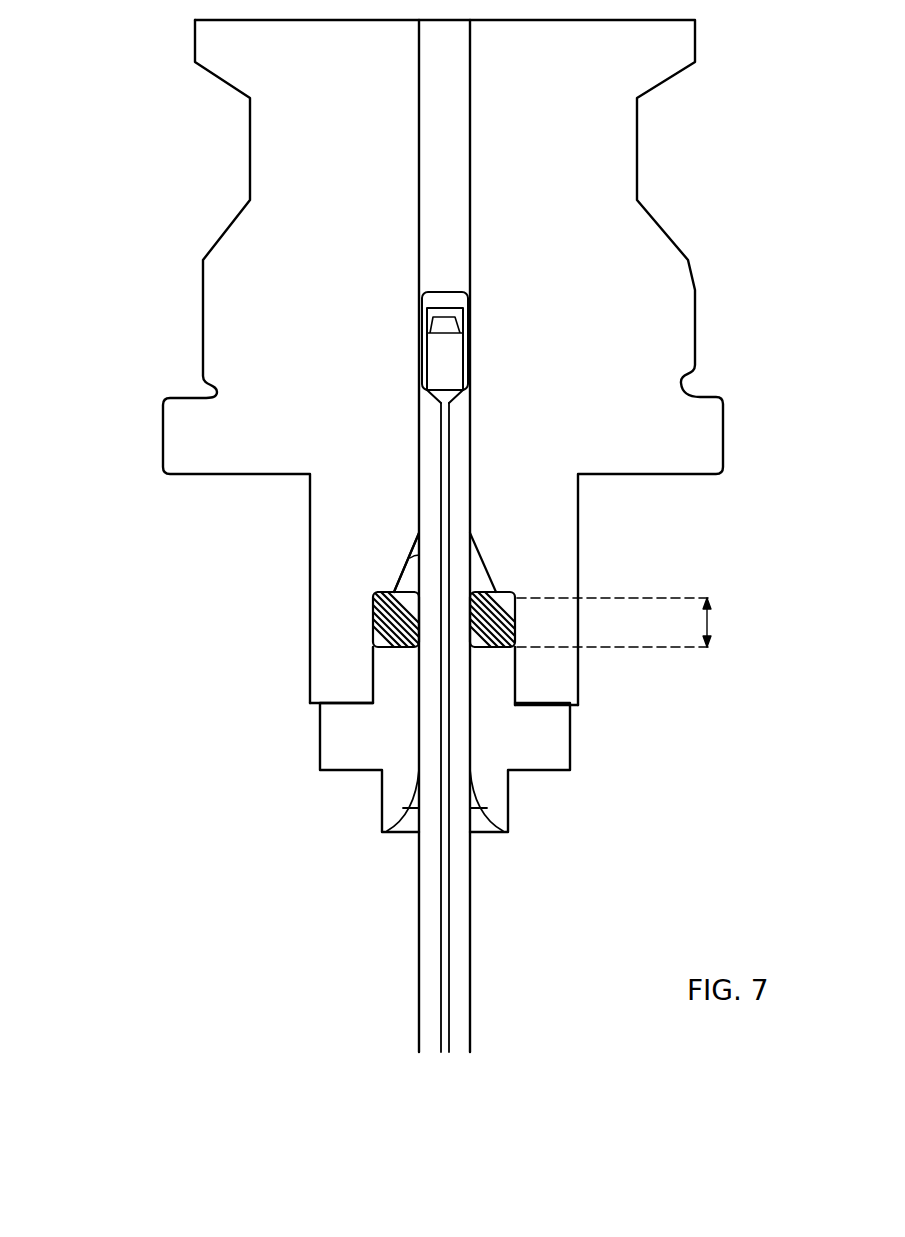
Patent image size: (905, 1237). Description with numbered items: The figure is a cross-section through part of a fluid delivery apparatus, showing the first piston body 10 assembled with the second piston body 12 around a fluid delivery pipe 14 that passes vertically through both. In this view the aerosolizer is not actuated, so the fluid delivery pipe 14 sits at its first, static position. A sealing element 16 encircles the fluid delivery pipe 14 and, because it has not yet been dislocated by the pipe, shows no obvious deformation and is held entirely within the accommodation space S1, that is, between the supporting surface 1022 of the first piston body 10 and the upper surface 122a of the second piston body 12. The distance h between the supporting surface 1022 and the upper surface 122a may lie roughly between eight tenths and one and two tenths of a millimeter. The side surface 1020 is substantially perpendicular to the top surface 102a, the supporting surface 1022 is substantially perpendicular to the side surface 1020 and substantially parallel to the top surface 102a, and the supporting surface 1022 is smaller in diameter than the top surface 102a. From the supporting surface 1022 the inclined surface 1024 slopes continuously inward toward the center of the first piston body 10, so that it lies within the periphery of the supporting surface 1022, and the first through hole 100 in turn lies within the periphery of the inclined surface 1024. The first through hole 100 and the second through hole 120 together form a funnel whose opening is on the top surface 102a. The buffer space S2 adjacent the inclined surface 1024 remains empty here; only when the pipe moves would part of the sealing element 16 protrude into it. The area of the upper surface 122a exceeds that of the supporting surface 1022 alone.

The first piston body 10 is at (203, 352).
The first through hole 100 is at (448, 253).
The second piston body 12 is at (320, 743).
The fluid delivery pipe 14 is at (419, 897).
The sealing element 16 is at (373, 633).
The second through hole 120 is at (470, 750).
The upper surface 122a is at (497, 648).
The top surface 102a is at (333, 703).
The side surface 1020 is at (520, 615).
The supporting surface 1022 is at (500, 592).
The inclined surface 1024 is at (500, 592).
The accommodation space S1 is at (373, 602).
The buffer space S2 is at (412, 556).
The distance h is at (614, 622).